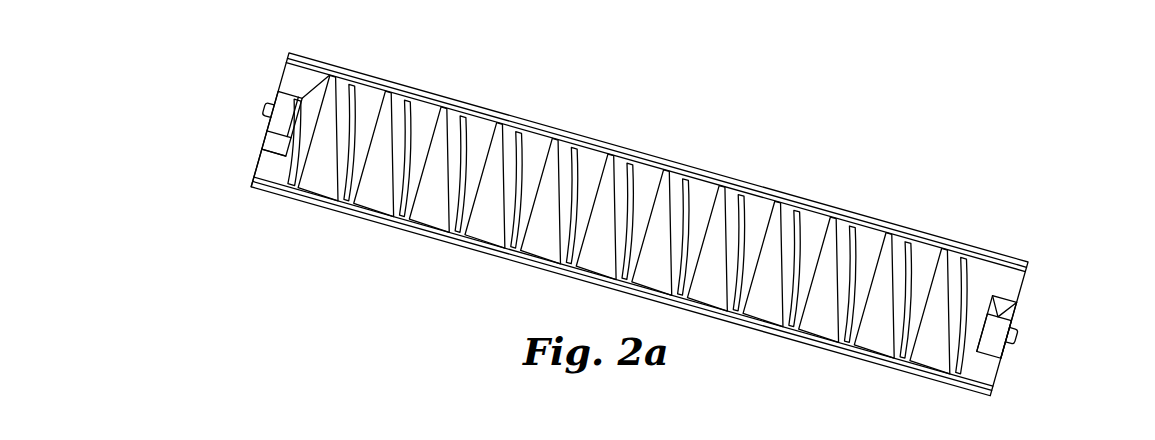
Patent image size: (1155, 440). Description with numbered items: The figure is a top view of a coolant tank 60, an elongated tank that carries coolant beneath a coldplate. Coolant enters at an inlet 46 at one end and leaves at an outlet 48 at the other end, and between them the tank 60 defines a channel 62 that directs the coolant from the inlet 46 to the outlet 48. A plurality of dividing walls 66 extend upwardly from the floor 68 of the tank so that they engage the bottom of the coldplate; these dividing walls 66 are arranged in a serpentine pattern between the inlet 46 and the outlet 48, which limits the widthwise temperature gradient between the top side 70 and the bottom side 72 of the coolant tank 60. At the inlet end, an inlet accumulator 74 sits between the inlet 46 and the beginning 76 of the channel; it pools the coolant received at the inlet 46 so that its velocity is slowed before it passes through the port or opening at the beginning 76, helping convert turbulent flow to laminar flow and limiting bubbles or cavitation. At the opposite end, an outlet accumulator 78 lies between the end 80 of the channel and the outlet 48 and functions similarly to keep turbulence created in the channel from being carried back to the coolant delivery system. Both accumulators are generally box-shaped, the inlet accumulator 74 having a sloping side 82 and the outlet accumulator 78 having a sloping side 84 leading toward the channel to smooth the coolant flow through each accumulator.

The coolant tank 60 is at (737, 112).
The channel 62 is at (314, 177).
The dividing walls 66 is at (325, 88).
The floor 68 is at (272, 172).
The top side 70 is at (543, 130).
The bottom side 72 is at (767, 337).
The inlet accumulator 74 is at (283, 113).
The beginning of the channel 76 is at (281, 156).
The outlet accumulator 78 is at (998, 340).
The end of the channel 80 is at (1003, 292).
The sloping side of inlet accumulator 82 is at (276, 148).
The sloping side of outlet accumulator 84 is at (1002, 310).
The inlet 46 is at (265, 113).
The outlet 48 is at (1018, 350).